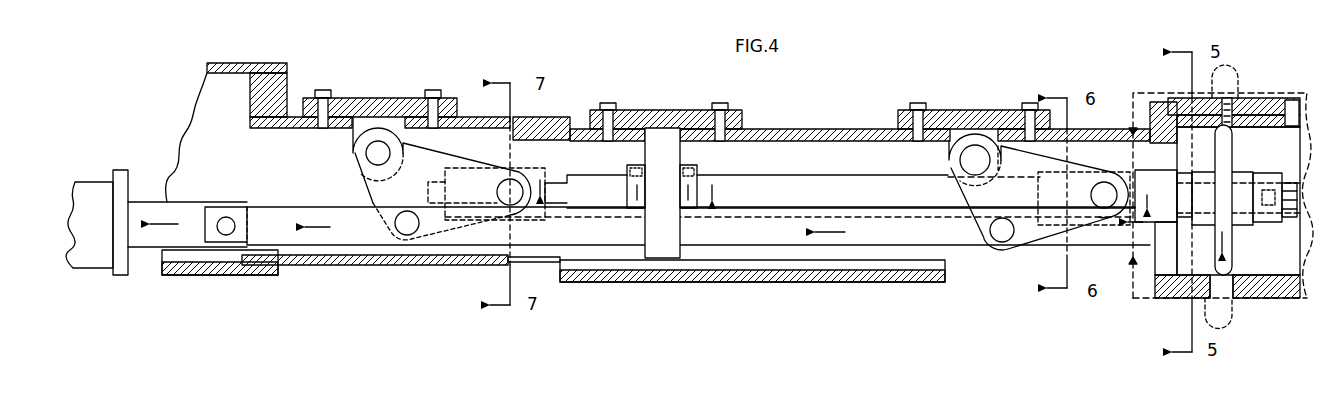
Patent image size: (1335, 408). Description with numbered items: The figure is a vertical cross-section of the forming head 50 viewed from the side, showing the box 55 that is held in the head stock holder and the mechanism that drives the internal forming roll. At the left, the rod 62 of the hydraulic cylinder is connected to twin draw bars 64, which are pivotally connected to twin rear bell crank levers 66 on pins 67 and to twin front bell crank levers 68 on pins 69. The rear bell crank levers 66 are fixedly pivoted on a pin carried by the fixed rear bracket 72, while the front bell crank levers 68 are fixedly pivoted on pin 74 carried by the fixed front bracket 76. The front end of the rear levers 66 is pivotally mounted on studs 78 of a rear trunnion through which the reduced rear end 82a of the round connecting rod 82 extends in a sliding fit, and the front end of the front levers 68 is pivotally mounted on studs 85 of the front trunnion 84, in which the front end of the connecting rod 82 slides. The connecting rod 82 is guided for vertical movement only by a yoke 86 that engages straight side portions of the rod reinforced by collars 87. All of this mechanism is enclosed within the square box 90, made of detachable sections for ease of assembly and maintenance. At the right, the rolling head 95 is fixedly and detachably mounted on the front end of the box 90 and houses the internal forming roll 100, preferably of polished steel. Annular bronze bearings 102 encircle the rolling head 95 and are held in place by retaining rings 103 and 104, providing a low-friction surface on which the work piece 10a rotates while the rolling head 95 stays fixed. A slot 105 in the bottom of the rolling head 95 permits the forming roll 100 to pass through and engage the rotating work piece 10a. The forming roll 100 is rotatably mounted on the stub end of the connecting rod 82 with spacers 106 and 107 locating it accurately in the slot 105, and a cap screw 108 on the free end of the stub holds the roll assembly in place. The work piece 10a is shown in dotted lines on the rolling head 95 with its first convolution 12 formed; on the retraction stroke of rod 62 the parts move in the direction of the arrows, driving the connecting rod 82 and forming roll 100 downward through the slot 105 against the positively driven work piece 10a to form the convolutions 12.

The box 55 is at (263, 69).
The forming head 50 is at (546, 101).
The square box 90 is at (828, 133).
The rod 62 is at (145, 215).
The twin draw bars 64 is at (328, 240).
The fixed rear bracket 72 is at (368, 122).
The studs 78 is at (520, 200).
The twin rear bell crank levers 66 is at (372, 197).
The pin 67 is at (407, 233).
The reduced rear end 82a is at (429, 185).
The round connecting rod 82 is at (780, 190).
The yoke 86 is at (668, 161).
The collars 87 is at (635, 167).
The fixed front bracket 76 is at (993, 133).
The pin 74 is at (950, 160).
The pin 69 is at (1000, 232).
The twin front bell crank levers 68 is at (1028, 240).
The studs 85 is at (1099, 195).
The front trunnion 84 is at (1130, 170).
The rolling head 95 is at (1148, 95).
The work piece 10a is at (1135, 301).
The retaining ring 103 is at (1297, 99).
The retaining ring 104 is at (1233, 103).
The spacer 107 is at (1187, 173).
The spacer 106 is at (1272, 168).
The cap screw 108 is at (1294, 218).
The internal forming roll 100 is at (1233, 260).
The annular bronze bearings 102 is at (1172, 290).
The first convolution 12 is at (1207, 322).
The slot 105 is at (1225, 295).